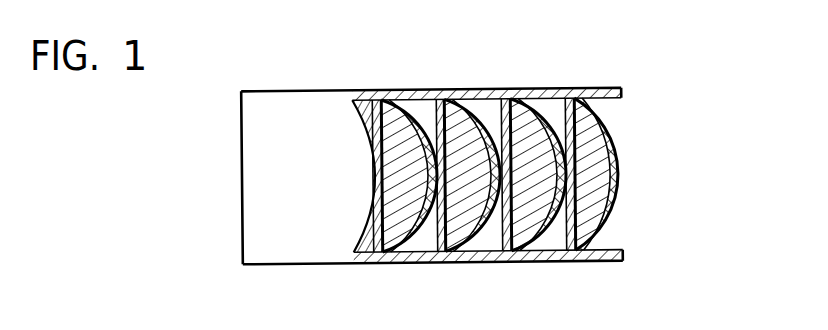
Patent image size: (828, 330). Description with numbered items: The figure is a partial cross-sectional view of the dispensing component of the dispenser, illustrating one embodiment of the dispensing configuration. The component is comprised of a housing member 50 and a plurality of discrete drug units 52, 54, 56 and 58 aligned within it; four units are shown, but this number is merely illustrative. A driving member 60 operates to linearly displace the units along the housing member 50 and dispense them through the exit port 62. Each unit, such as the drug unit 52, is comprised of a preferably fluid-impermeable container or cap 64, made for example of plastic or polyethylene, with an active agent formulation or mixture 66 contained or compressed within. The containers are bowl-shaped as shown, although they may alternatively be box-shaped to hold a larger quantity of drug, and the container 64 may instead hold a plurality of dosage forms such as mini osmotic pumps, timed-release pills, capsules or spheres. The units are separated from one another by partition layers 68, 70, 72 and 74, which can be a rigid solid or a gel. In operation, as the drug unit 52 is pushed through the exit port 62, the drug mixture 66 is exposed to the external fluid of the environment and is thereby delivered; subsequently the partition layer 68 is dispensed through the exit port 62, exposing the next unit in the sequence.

The housing member 50 is at (453, 89).
The drug unit 52 is at (618, 145).
The drug unit 54 is at (541, 89).
The drug unit 56 is at (483, 89).
The drug unit 58 is at (401, 89).
The driving member 60 is at (308, 88).
The exit port 62 is at (618, 103).
The container 64 is at (614, 210).
The active agent formulation 66 is at (608, 167).
The partition layer 68 is at (568, 254).
The partition layer 70 is at (500, 254).
The partition layer 72 is at (428, 258).
The partition layer 74 is at (362, 253).